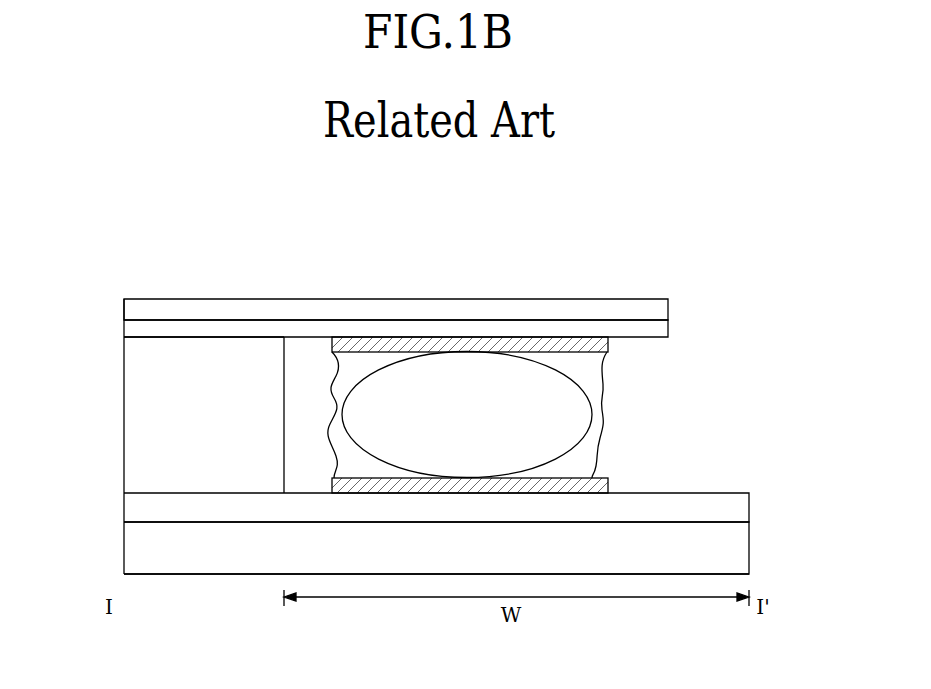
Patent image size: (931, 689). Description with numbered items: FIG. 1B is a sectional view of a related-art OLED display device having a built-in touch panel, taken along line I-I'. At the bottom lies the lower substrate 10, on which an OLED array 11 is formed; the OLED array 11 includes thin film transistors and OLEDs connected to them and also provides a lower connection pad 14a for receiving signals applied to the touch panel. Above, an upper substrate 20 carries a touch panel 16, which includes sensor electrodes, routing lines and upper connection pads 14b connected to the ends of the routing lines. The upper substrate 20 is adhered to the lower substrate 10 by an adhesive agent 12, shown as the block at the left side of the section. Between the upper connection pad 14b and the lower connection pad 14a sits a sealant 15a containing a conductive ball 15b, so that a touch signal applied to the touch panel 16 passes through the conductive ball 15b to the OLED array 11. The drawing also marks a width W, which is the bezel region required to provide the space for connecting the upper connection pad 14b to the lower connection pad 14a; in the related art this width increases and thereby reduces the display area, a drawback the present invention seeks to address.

The lower substrate 10 is at (742, 550).
The OLED array 11 is at (742, 511).
The adhesive agent 12 is at (137, 416).
The lower connection pad 14a is at (608, 480).
The upper connection pad 14b is at (608, 340).
The sealant 15a is at (601, 437).
The conductive ball 15b is at (583, 405).
The touch panel 16 is at (668, 329).
The upper substrate 20 is at (668, 311).